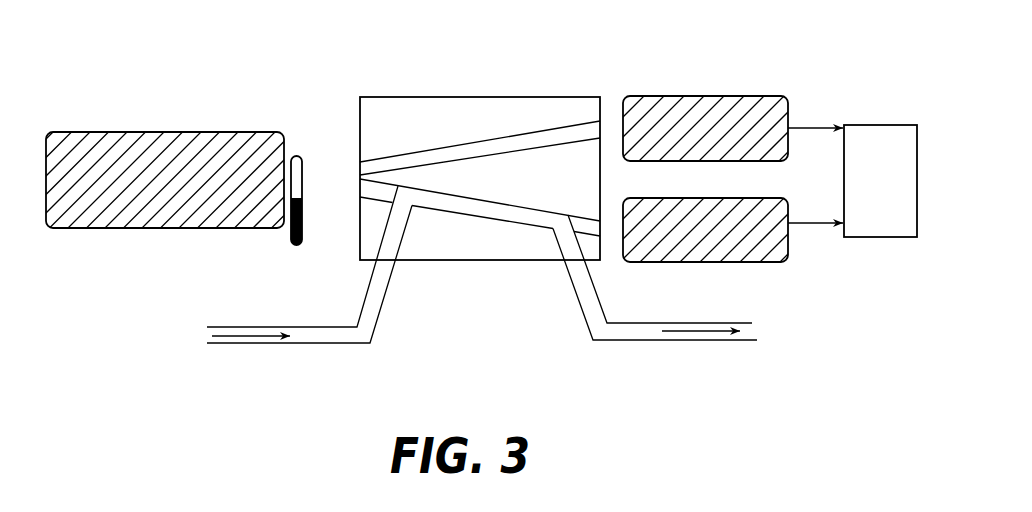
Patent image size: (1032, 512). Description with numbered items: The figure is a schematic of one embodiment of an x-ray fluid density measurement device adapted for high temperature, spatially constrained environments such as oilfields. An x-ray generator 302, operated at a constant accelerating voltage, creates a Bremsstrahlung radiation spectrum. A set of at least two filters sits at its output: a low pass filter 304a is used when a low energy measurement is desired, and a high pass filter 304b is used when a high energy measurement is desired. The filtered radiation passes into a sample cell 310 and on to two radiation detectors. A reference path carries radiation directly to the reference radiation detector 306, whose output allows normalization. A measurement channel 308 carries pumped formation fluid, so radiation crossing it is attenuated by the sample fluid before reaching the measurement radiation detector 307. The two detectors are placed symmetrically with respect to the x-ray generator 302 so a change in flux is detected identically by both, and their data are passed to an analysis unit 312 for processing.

The x-ray generator 302 is at (153, 115).
The low pass filter 304a is at (302, 153).
The high pass filter 304b is at (287, 240).
The reference radiation detector 306 is at (790, 90).
The measurement radiation detector 307 is at (740, 263).
The measurement channel 308 is at (292, 357).
The sample cell 310 is at (500, 282).
The analysis unit 312 is at (872, 122).